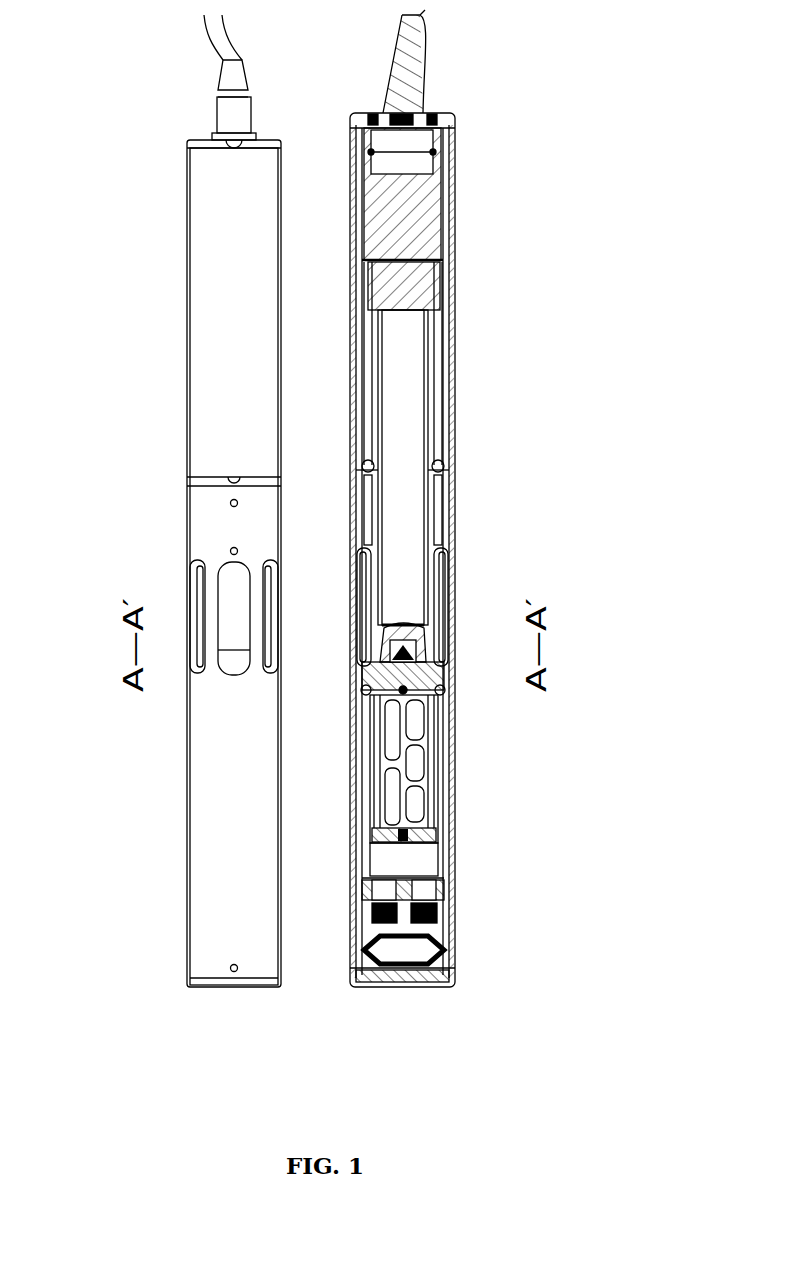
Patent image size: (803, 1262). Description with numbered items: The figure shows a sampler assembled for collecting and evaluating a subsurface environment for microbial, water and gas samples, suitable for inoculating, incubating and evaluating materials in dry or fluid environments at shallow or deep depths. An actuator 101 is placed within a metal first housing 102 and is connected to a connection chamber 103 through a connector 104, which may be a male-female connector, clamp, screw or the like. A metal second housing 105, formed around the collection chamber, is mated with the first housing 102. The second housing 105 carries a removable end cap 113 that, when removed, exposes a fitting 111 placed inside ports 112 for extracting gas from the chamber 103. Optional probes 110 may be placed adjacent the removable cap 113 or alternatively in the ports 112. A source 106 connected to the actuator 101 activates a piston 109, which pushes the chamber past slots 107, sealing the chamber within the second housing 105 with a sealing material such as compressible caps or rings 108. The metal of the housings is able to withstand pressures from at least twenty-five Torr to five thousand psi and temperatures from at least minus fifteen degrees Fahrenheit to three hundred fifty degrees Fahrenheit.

The actuator 101 is at (415, 198).
The first housing 102 is at (182, 409).
The connection chamber 103 is at (455, 830).
The connector 104 is at (447, 688).
The second housing 105 is at (182, 885).
The source 106 is at (222, 107).
The slots 107 is at (190, 572).
The compressible caps or rings 108 is at (455, 905).
The piston 109 is at (410, 537).
The probes 110 is at (429, 963).
The fitting 111 is at (446, 921).
The ports 112 is at (455, 888).
The removable end cap 113 is at (189, 984).